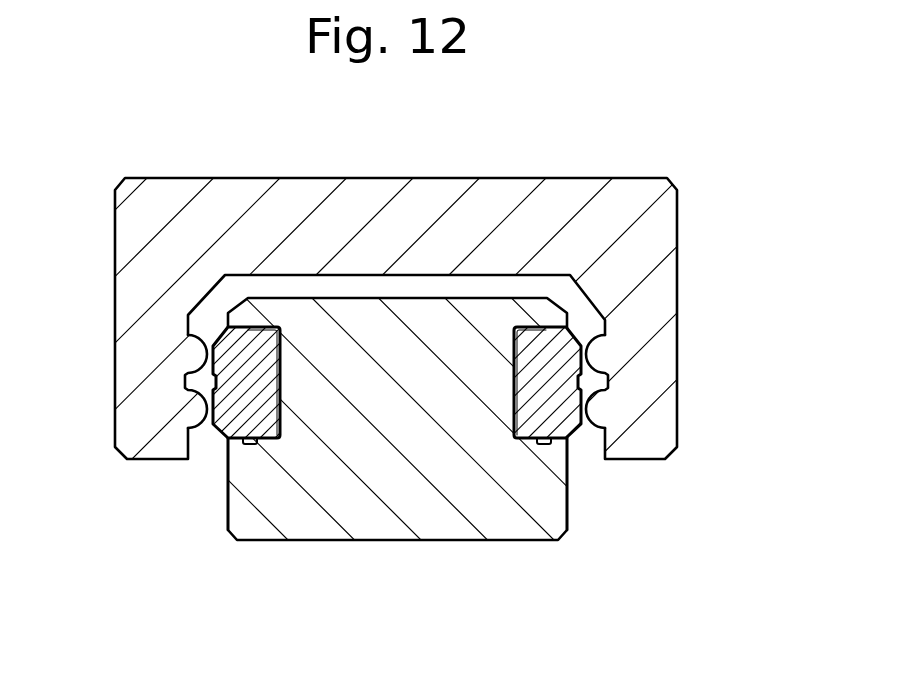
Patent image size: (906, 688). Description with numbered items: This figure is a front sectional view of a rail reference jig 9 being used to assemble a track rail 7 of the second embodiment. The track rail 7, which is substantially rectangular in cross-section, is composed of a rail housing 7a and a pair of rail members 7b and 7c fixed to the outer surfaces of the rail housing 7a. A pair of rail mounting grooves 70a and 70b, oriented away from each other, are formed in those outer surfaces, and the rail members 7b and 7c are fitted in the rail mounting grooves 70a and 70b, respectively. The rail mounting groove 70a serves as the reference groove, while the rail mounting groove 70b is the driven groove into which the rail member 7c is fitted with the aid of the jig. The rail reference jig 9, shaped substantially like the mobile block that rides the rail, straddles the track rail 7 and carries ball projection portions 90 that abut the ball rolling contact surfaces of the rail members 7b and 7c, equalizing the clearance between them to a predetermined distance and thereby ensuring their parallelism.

The rail reference jig 9 is at (435, 170).
The track rail 7 is at (407, 425).
The rail housing 7a is at (427, 500).
The rail member 7b is at (562, 442).
The rail member 7c is at (257, 442).
The rail mounting groove 70a is at (523, 368).
The rail mounting groove 70b is at (261, 352).
The ball projection portions 90 is at (193, 404).